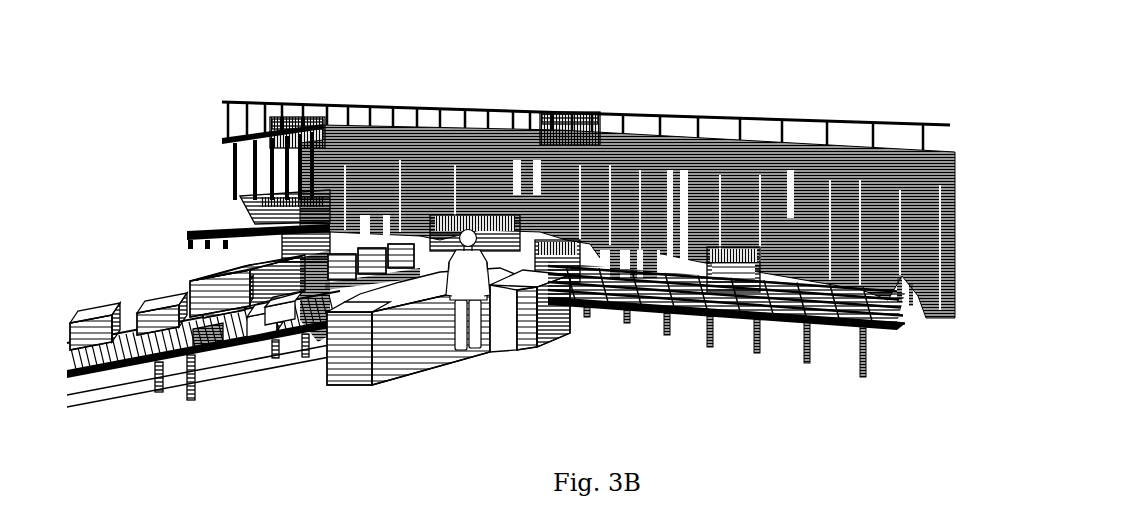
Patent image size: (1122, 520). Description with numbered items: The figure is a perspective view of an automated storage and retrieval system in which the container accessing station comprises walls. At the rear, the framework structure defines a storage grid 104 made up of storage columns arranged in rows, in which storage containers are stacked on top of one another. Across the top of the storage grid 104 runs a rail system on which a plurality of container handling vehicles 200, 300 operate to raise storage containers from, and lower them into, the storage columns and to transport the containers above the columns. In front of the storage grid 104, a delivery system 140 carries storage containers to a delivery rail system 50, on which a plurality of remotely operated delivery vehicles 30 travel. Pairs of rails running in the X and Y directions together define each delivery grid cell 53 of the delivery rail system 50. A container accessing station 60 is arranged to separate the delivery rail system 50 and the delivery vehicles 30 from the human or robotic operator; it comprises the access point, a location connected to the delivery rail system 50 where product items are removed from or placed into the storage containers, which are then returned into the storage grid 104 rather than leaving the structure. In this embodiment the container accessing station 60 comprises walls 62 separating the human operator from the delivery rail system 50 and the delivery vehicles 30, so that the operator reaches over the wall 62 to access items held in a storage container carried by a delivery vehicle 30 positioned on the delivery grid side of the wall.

The storage grid 104 is at (855, 126).
The first container handling vehicle 200 is at (393, 81).
The second container handling vehicle 300 is at (290, 123).
The delivery vehicle 30 is at (262, 205).
The delivery system 140 is at (170, 235).
The container accessing station 60 is at (448, 356).
The wall 62 is at (527, 328).
The delivery rail system 50 is at (903, 333).
The delivery grid cell 53 is at (675, 325).